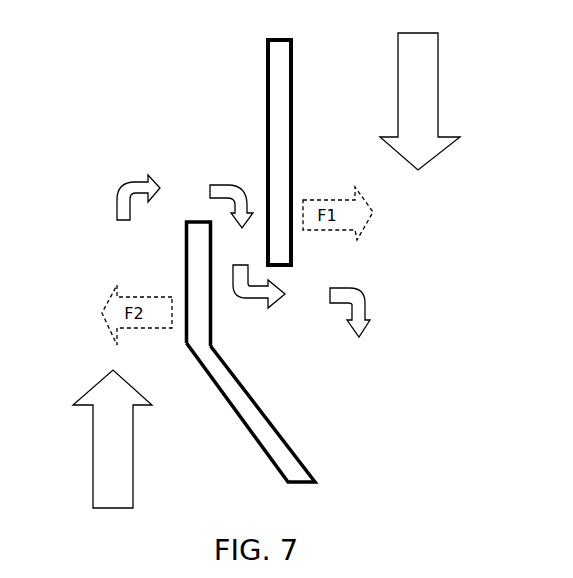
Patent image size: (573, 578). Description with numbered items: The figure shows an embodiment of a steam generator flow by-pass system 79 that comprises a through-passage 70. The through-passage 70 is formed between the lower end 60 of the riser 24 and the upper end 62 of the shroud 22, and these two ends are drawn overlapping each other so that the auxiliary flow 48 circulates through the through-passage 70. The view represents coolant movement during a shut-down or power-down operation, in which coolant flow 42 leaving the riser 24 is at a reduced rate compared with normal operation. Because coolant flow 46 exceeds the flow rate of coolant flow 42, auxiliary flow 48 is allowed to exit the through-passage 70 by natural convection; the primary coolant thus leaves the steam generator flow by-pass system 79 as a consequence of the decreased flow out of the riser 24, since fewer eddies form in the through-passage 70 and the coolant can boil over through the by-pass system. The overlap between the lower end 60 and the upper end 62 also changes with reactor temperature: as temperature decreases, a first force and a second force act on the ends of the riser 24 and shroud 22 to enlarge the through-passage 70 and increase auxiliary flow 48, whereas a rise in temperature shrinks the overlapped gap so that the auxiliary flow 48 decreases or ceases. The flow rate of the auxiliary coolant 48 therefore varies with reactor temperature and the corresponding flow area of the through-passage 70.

The shroud 22 is at (297, 428).
The riser 24 is at (255, 118).
The coolant flow 42 is at (397, 82).
The coolant flow 46 is at (142, 417).
The auxiliary flow 48 is at (117, 183).
The lower end of the riser 60 is at (300, 193).
The upper end of the shroud 62 is at (178, 290).
The through-passage 70 is at (235, 240).
The steam generator flow by-pass system 79 is at (337, 263).